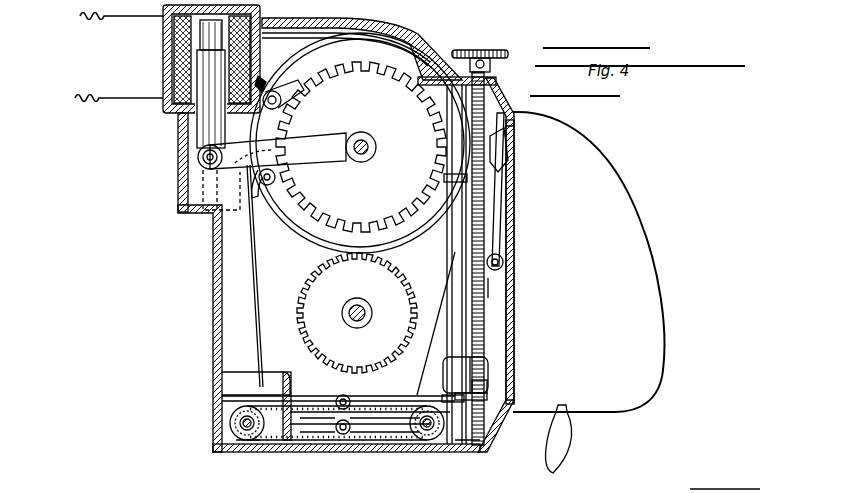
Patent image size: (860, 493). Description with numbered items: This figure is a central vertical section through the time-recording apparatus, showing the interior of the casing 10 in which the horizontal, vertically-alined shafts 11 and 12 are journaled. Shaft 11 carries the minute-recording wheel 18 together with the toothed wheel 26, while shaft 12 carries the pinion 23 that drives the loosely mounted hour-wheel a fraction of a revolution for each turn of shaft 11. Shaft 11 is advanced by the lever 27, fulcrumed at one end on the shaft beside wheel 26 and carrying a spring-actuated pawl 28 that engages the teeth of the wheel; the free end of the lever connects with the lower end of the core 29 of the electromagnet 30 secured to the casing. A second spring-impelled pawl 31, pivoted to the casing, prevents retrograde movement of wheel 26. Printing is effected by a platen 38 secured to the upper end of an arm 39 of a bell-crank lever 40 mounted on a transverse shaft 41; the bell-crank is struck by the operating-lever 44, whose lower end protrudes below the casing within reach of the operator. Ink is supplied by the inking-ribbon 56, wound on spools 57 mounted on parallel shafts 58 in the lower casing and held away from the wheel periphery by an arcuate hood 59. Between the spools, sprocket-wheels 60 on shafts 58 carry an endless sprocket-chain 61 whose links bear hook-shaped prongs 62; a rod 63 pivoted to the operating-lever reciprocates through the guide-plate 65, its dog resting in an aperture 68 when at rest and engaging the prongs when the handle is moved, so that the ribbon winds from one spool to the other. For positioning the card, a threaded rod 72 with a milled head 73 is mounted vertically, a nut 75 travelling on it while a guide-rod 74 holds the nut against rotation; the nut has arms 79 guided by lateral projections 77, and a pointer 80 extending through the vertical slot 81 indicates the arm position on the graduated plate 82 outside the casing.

The casing 10 is at (214, 298).
The shaft 11 is at (363, 140).
The shaft 12 is at (352, 306).
The minute-recording wheel 18 is at (360, 143).
The pinion 23 is at (357, 313).
The toothed wheel 26 is at (361, 147).
The lever 27 is at (272, 171).
The spring-actuated pawl 28 is at (256, 197).
The core 29 is at (210, 125).
The electromagnet 30 is at (163, 63).
The spring-impelled pawl 31 is at (290, 90).
The platen 38 is at (495, 148).
The arm 39 is at (500, 208).
The bell-crank lever 40 is at (498, 288).
The shaft 41 is at (500, 258).
The operating-lever 44 is at (566, 446).
The inking-ribbon 56 is at (261, 300).
The ribbon-spool 57 is at (232, 423).
The spool shaft 58 is at (237, 432).
The arcuate hood 59 is at (392, 26).
The sprocket-wheel 60 is at (255, 444).
The sprocket-chain 61 is at (368, 446).
The hook-shaped prong 62 is at (322, 446).
The rod 63 is at (358, 402).
The guide-plate 65 is at (286, 372).
The aperture 68 is at (222, 398).
The threaded rod 72 is at (482, 308).
The milled head 73 is at (505, 50).
The guide-rod 74 is at (452, 303).
The nut 75 is at (472, 364).
The lateral projection 77 is at (487, 386).
The arm 79 is at (489, 397).
The pointer 80 is at (588, 262).
The vertical slot 81 is at (510, 226).
The graduated plate 82 is at (512, 332).